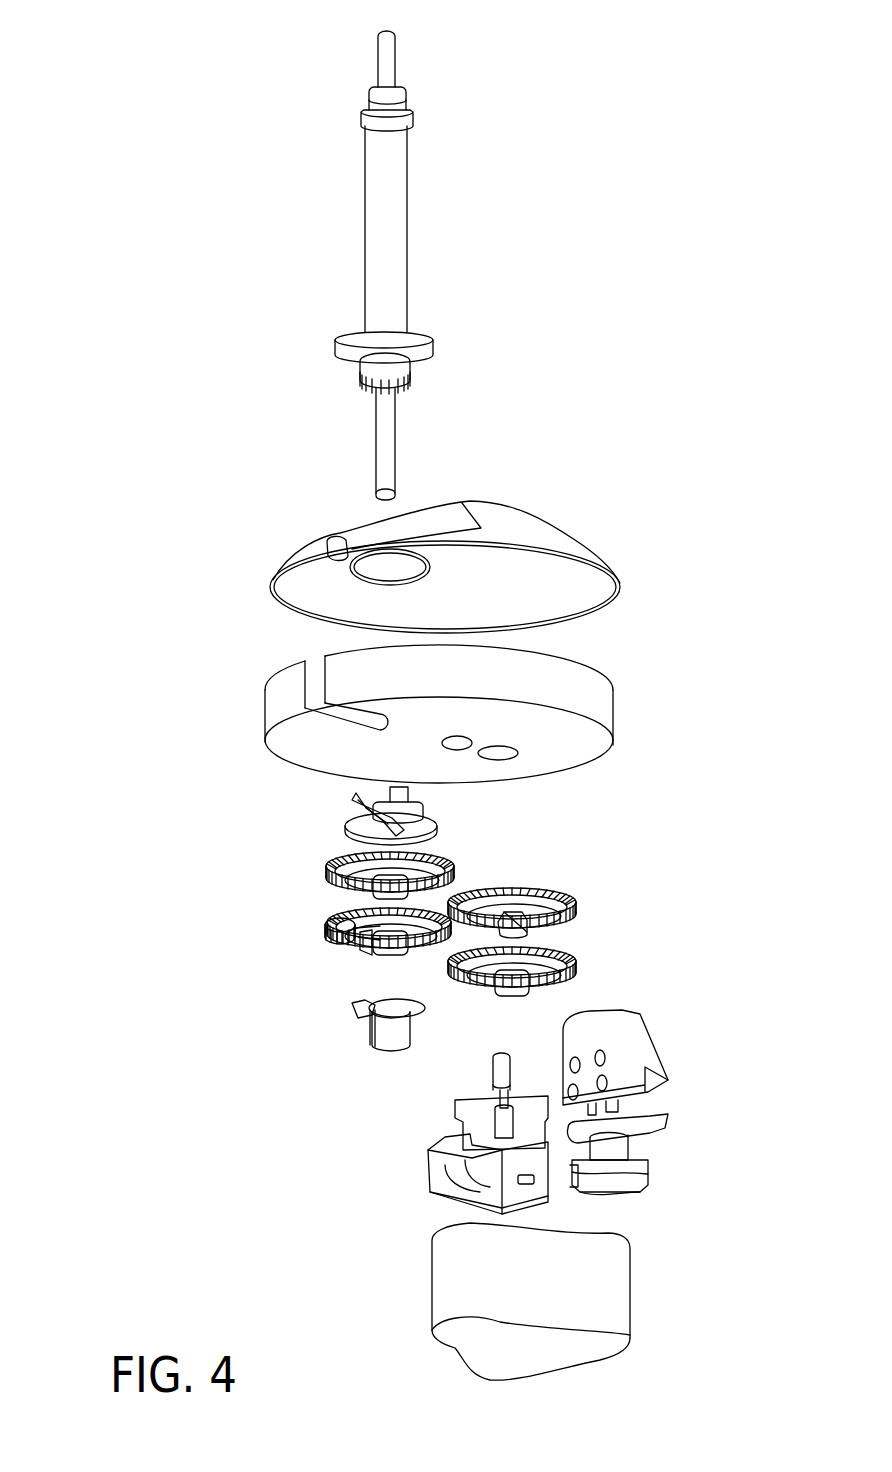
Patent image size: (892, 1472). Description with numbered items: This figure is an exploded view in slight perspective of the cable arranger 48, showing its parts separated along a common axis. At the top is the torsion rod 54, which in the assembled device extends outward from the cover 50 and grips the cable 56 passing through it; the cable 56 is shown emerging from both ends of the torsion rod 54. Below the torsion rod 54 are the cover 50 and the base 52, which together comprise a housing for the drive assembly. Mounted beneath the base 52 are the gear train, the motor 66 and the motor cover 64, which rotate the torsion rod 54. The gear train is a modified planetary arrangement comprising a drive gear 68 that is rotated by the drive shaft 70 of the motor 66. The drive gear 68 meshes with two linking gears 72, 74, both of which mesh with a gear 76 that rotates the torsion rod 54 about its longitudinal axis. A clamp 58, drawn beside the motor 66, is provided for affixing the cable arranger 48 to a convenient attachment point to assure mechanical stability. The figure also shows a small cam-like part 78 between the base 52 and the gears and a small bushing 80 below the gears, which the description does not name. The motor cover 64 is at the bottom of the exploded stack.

The cable arranger 48 is at (617, 405).
The cover 50 is at (556, 538).
The base 52 is at (605, 712).
The torsion rod 54 is at (398, 203).
The cable 56 is at (383, 52).
The clamp 58 is at (652, 1035).
The motor cover 64 is at (612, 1288).
The motor 66 is at (430, 1168).
The drive gear 68 is at (578, 968).
The drive shaft 70 is at (492, 1062).
The linking gear 72 is at (327, 866).
The linking gear 74 is at (578, 904).
The gear 76 is at (325, 935).
The cam pawl 78 is at (345, 838).
The bushing 80 is at (350, 1022).